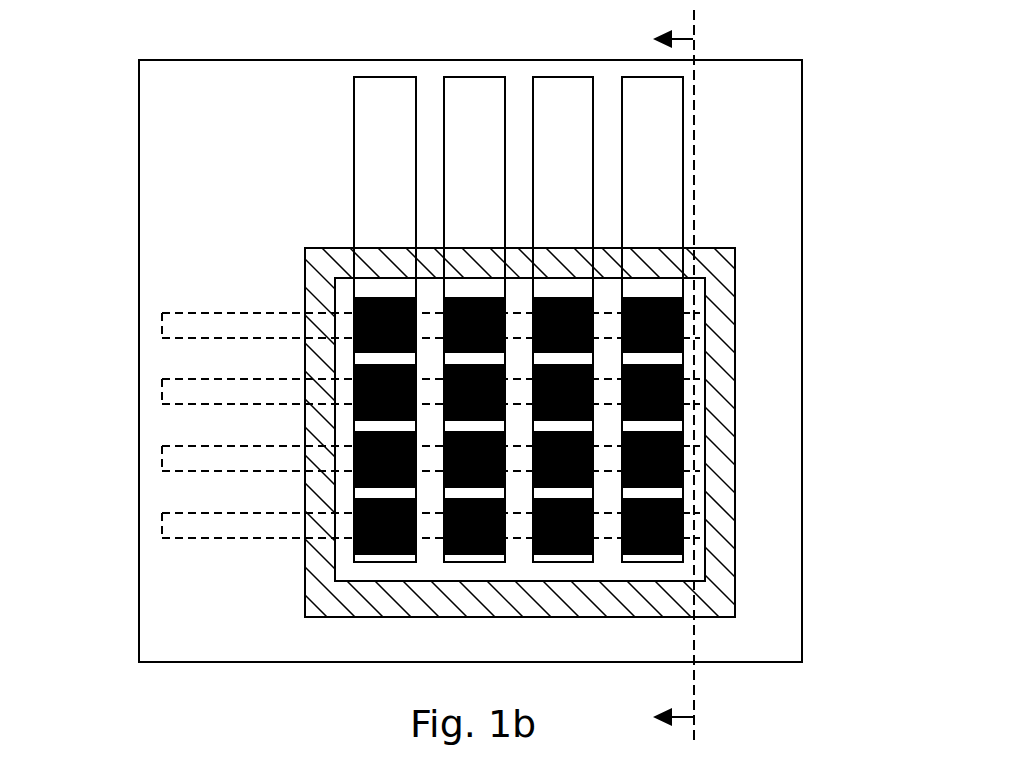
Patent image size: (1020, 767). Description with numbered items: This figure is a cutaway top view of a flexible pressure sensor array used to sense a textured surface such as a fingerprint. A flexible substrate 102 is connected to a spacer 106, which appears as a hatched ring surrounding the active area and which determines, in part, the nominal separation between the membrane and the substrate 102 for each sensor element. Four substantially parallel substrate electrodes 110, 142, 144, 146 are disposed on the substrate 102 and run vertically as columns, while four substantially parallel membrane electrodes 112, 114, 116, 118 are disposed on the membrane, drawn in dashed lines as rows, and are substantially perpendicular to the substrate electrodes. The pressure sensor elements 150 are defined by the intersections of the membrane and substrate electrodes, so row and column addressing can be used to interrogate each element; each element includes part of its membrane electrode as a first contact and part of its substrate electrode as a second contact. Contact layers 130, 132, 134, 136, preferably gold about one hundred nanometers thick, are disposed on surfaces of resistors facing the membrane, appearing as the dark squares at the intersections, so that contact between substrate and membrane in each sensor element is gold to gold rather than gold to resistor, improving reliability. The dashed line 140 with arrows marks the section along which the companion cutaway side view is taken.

The flexible substrate 102 is at (155, 163).
The spacer 106 is at (331, 258).
The substrate electrode 110 is at (664, 117).
The membrane electrode 112 is at (162, 536).
The membrane electrode 114 is at (162, 468).
The membrane electrode 116 is at (162, 397).
The membrane electrode 118 is at (162, 326).
The contact layer 130 is at (683, 543).
The contact layer 132 is at (683, 470).
The contact layer 134 is at (683, 405).
The contact layer 136 is at (683, 335).
The line 140 is at (693, 75).
The substrate electrode 142 is at (555, 95).
The substrate electrode 144 is at (482, 95).
The substrate electrode 146 is at (388, 95).
The pressure sensor elements 150 is at (348, 567).